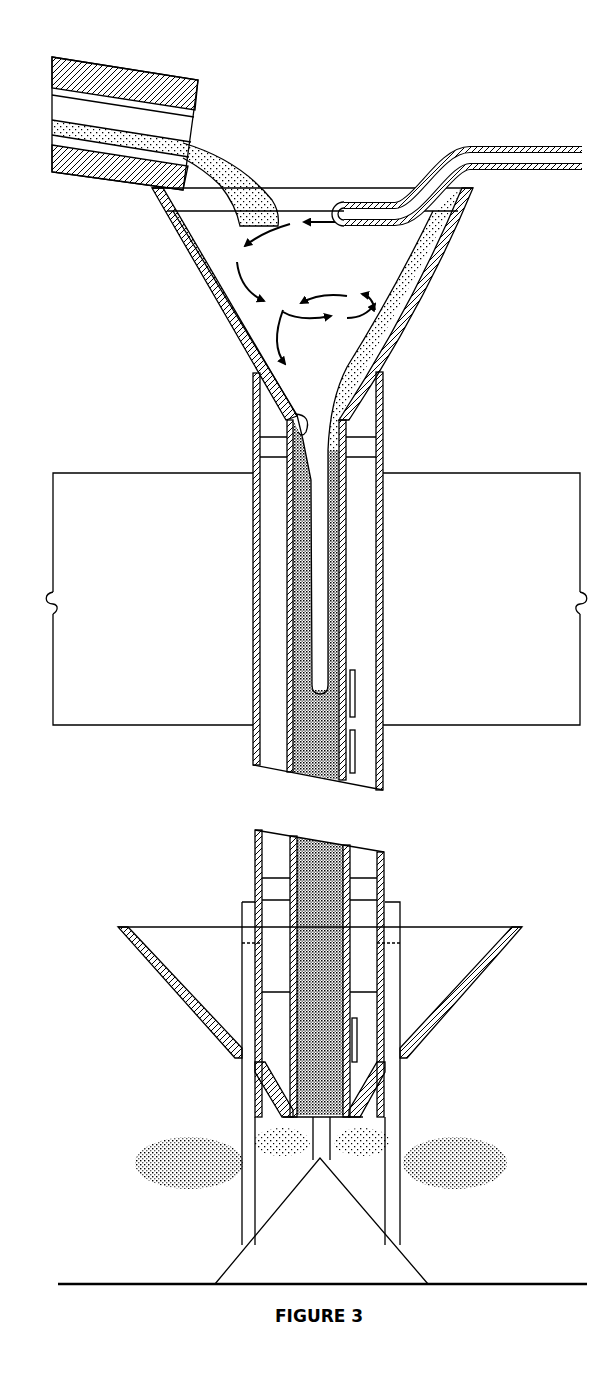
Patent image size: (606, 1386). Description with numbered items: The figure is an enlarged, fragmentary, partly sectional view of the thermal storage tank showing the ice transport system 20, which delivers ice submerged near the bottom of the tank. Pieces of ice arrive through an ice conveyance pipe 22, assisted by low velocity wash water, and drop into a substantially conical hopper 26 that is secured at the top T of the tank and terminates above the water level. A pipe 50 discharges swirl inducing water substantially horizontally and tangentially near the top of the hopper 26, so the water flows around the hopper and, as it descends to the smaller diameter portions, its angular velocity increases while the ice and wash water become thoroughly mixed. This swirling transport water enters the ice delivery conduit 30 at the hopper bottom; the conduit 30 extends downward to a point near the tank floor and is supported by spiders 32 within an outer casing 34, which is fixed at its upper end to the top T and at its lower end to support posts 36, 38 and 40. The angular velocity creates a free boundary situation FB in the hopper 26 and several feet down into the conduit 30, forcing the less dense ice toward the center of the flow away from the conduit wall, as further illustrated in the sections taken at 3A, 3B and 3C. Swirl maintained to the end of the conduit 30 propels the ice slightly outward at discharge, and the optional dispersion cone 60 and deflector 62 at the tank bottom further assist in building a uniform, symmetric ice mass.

The ice transport system 20 is at (384, 105).
The ice conveyance pipe 22 is at (106, 57).
The conical hopper 26 is at (395, 338).
The ice delivery conduit 30 is at (350, 468).
The spiders 32 is at (362, 446).
The outer casing 34 is at (385, 407).
The support post 36 is at (250, 1097).
The support post 38 is at (322, 1140).
The support post 40 is at (393, 1223).
The swirl water pipe 50 is at (535, 146).
The dispersion cone 60 is at (234, 1257).
The deflector 62 is at (172, 988).
The section line 3A is at (356, 697).
The section line 3B is at (356, 752).
The section line 3C is at (358, 1040).
The free boundary FB is at (292, 422).
The top of the tank T is at (215, 482).